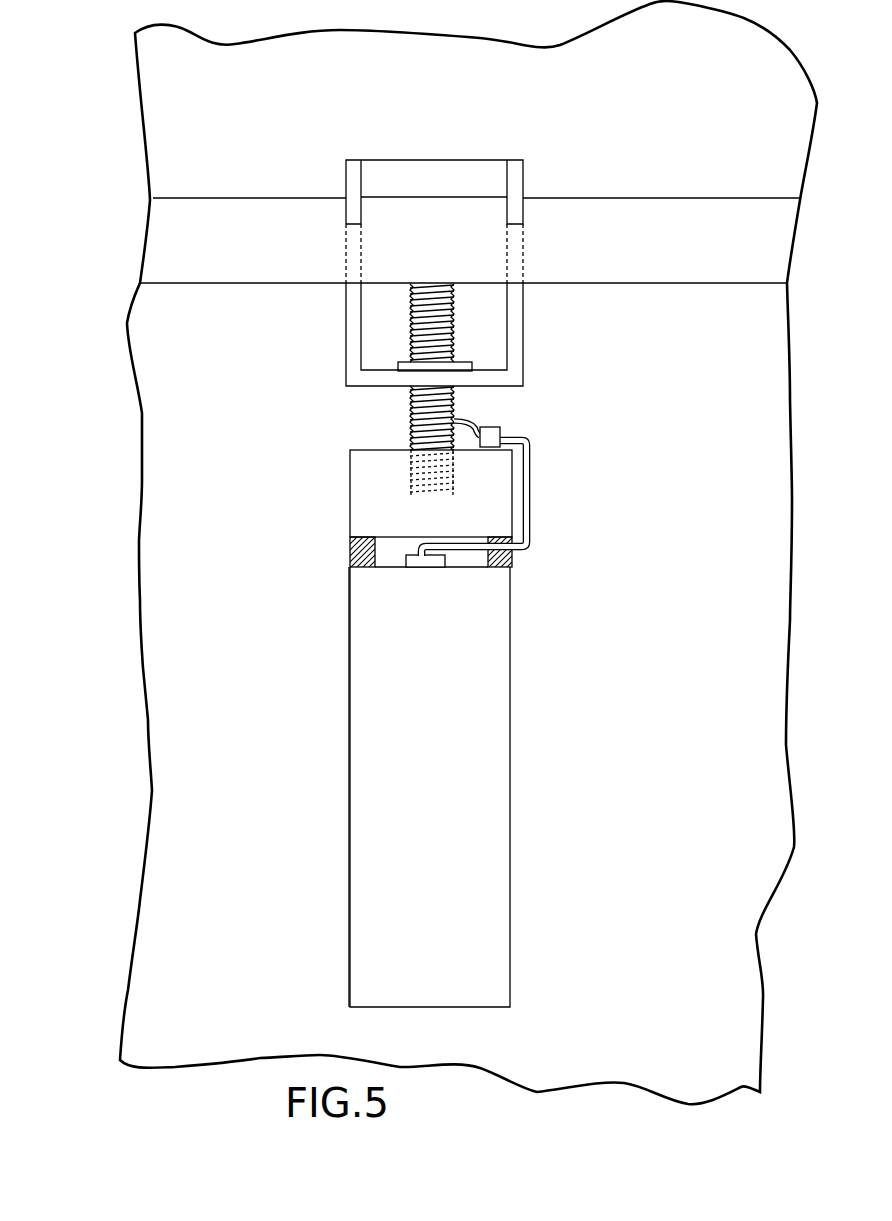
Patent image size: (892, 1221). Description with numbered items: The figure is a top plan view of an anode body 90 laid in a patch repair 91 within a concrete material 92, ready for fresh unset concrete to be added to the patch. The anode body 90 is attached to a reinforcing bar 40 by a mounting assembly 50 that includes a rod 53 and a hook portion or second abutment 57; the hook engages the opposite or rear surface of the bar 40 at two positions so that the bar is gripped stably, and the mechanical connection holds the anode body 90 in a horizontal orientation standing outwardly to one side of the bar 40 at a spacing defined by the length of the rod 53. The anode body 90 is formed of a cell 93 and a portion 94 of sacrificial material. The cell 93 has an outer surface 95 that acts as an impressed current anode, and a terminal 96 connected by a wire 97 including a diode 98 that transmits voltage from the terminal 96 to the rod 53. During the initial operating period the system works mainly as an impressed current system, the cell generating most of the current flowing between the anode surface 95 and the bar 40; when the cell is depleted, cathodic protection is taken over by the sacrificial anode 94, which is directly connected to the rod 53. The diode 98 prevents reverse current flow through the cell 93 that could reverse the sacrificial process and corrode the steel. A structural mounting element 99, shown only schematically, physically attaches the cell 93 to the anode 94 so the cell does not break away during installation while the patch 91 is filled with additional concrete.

The bar 40 is at (741, 220).
The mounting assembly 50 is at (458, 239).
The rod 53 is at (440, 397).
The second abutment 57 is at (348, 148).
The anode body 90 is at (447, 708).
The patch repair 91 is at (143, 668).
The concrete material 92 is at (90, 706).
The cell 93 is at (480, 893).
The sacrificial anode 94 is at (364, 496).
The outer surface 95 is at (348, 787).
The terminal 96 is at (421, 567).
The wire 97 is at (530, 501).
The diode 98 is at (488, 441).
The structural mounting element 99 is at (349, 555).